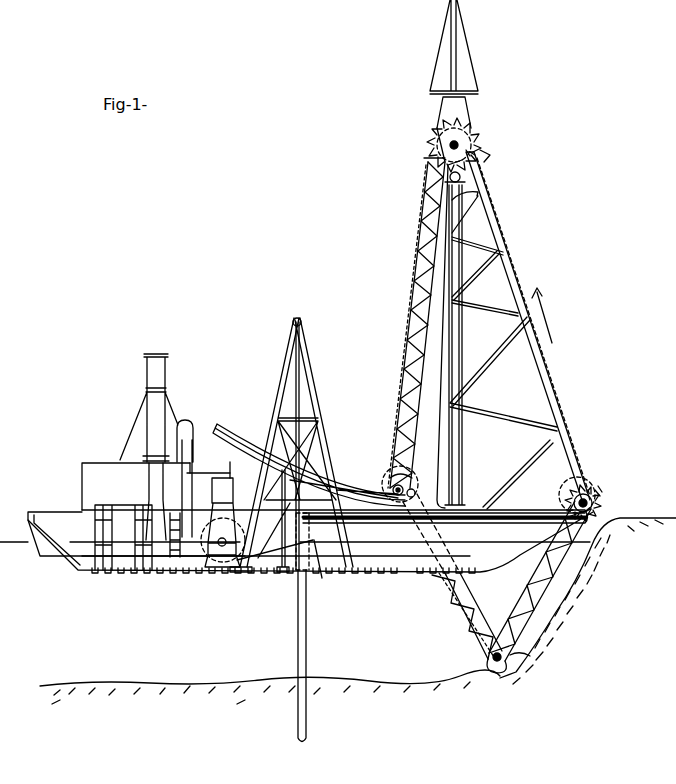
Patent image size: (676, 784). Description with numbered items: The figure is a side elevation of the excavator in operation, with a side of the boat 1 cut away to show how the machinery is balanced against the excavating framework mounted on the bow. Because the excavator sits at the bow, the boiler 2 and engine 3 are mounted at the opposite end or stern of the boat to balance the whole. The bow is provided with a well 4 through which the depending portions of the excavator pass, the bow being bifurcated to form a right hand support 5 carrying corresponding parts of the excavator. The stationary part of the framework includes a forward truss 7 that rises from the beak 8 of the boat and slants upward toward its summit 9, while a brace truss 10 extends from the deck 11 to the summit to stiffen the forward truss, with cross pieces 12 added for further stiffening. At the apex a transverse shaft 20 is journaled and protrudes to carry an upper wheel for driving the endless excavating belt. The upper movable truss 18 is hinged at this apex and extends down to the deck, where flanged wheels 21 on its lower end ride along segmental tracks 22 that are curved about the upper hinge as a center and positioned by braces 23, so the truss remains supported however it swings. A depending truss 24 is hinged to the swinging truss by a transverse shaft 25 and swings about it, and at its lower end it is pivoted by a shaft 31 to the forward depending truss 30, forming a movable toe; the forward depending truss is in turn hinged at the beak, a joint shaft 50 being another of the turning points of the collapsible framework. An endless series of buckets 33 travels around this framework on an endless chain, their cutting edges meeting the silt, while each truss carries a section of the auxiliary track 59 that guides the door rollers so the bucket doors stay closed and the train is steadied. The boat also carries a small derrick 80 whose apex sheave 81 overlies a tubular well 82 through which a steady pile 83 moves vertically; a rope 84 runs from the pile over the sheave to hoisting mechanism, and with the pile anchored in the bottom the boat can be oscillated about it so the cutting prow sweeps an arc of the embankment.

The boat 1 is at (375, 553).
The boiler 2 is at (112, 508).
The engine 3 is at (215, 480).
The well 4 is at (321, 569).
The right hand support 5 is at (497, 555).
The forward truss 7 is at (545, 376).
The beak 8 is at (563, 499).
The summit 9 is at (460, 110).
The brace truss 10 is at (448, 446).
The deck 11 is at (463, 503).
The cross pieces 12 is at (486, 368).
The upper movable truss 18 is at (420, 396).
The shaft 20 is at (448, 146).
The flanged wheels 21 is at (414, 492).
The segmental tracks 22 is at (230, 460).
The braces 23 is at (262, 518).
The depending truss 24 is at (478, 622).
The transverse shaft 25 is at (420, 483).
The forward depending truss 30 is at (538, 600).
The shaft 31 is at (507, 676).
The buckets 33 is at (470, 152).
The joint shaft 50 is at (598, 500).
The auxiliary track 59 is at (418, 308).
The derrick 80 is at (318, 380).
The sheave 81 is at (297, 316).
The tubular well 82 is at (308, 541).
The pile 83 is at (300, 622).
The rope 84 is at (292, 446).